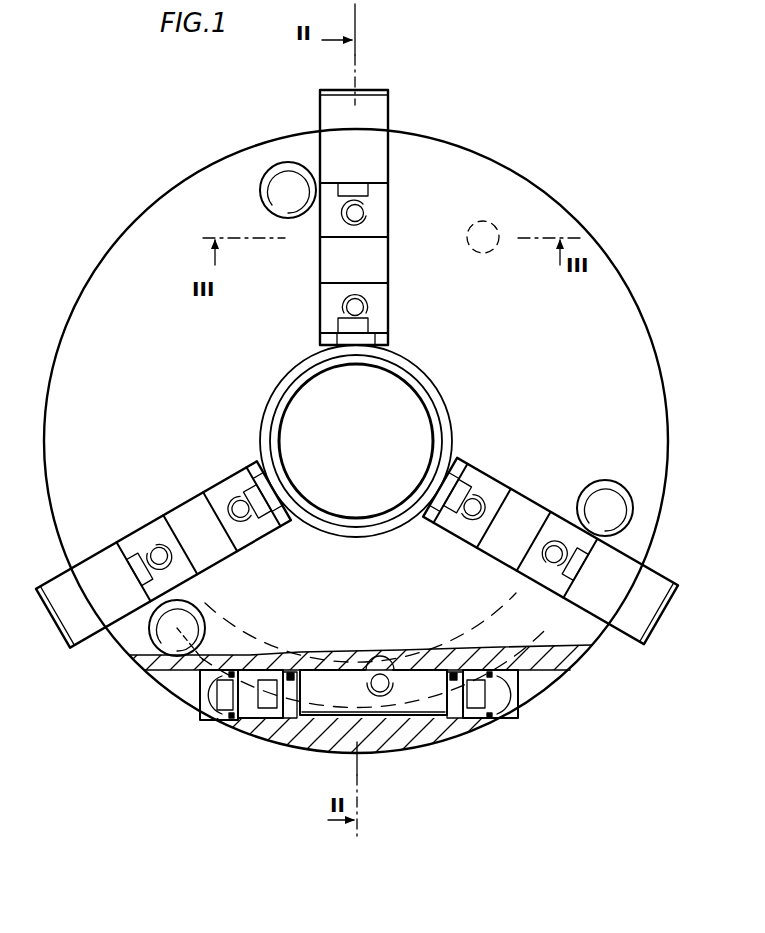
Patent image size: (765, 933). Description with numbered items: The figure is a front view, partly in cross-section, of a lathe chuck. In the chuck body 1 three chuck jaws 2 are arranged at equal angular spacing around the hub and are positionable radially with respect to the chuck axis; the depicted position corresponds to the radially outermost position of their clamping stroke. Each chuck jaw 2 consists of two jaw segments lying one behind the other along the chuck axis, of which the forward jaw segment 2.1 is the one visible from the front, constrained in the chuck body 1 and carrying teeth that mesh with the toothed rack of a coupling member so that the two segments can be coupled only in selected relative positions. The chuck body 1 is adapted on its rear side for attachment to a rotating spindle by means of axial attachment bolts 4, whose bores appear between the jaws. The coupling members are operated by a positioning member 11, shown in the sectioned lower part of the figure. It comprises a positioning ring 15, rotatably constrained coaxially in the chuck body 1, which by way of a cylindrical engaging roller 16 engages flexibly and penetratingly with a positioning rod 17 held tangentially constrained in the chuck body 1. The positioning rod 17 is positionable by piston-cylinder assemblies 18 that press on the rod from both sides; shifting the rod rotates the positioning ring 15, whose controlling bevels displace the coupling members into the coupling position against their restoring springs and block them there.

The chuck body 1 is at (627, 283).
The chuck jaws 2 is at (356, 379).
The forward jaw segment 2.1 is at (381, 153).
The axial attachment bolts 4 is at (268, 176).
The positioning member 11 is at (381, 662).
The positioning ring 15 is at (375, 648).
The engaging roller 16 is at (392, 684).
The positioning rod 17 is at (334, 690).
The piston-cylinder assemblies 18 is at (289, 674).